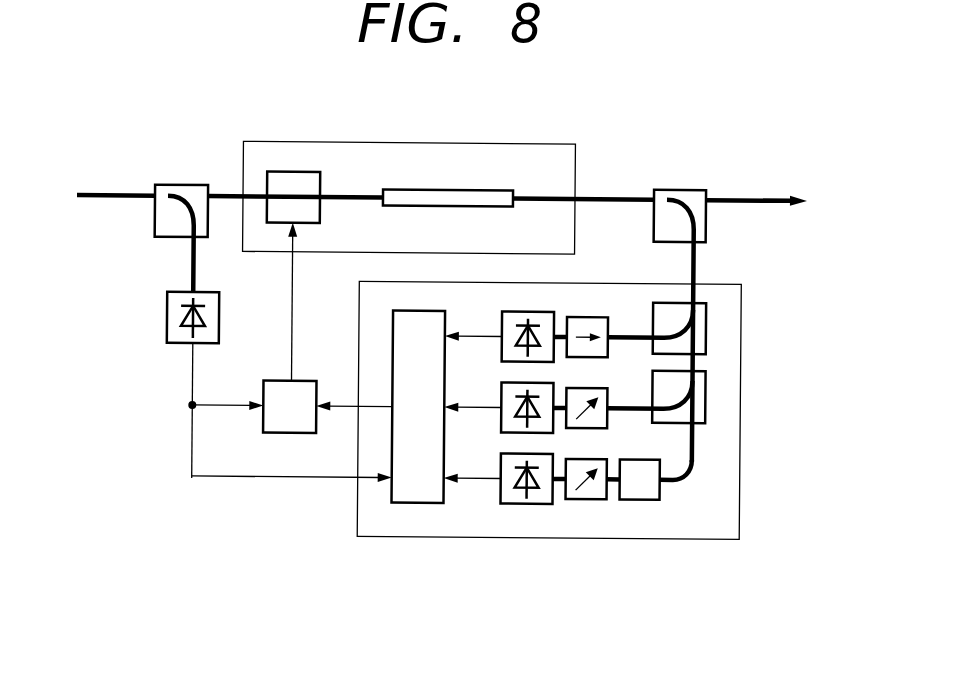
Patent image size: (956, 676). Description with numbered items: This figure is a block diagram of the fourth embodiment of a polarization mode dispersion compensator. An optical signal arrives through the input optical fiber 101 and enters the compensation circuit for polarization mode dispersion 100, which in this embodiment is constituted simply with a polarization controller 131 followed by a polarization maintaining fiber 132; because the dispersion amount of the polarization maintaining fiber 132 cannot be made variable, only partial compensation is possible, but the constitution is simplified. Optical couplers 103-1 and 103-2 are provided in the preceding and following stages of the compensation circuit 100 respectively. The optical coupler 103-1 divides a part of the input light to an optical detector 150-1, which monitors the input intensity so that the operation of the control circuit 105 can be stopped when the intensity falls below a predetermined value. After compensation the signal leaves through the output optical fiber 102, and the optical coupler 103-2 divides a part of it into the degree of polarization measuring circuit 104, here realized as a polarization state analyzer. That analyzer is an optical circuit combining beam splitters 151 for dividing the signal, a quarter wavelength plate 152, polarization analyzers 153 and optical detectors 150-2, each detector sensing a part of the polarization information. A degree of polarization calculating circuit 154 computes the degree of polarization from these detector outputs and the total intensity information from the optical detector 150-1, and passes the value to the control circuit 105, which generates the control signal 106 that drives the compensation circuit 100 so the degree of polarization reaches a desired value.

The compensation circuit for polarization mode dispersion 100 is at (543, 143).
The input optical fiber 101 is at (120, 197).
The output optical fiber 102 is at (768, 197).
The optical coupler 103-1 is at (196, 187).
The optical coupler 103-2 is at (690, 188).
The degree of polarization measuring circuit 104 is at (713, 282).
The control circuit 105 is at (297, 382).
The control signal 106 is at (293, 318).
The polarization controller 131 is at (300, 173).
The polarization maintaining fiber 132 is at (489, 190).
The optical detector 150-1 is at (168, 318).
The optical detectors 150-2 is at (522, 505).
The beam splitters 151 is at (707, 321).
The ¼ wavelength plate 152 is at (628, 499).
The polarization analyzers 153 is at (563, 499).
The degree of polarization calculating circuit 154 is at (408, 504).